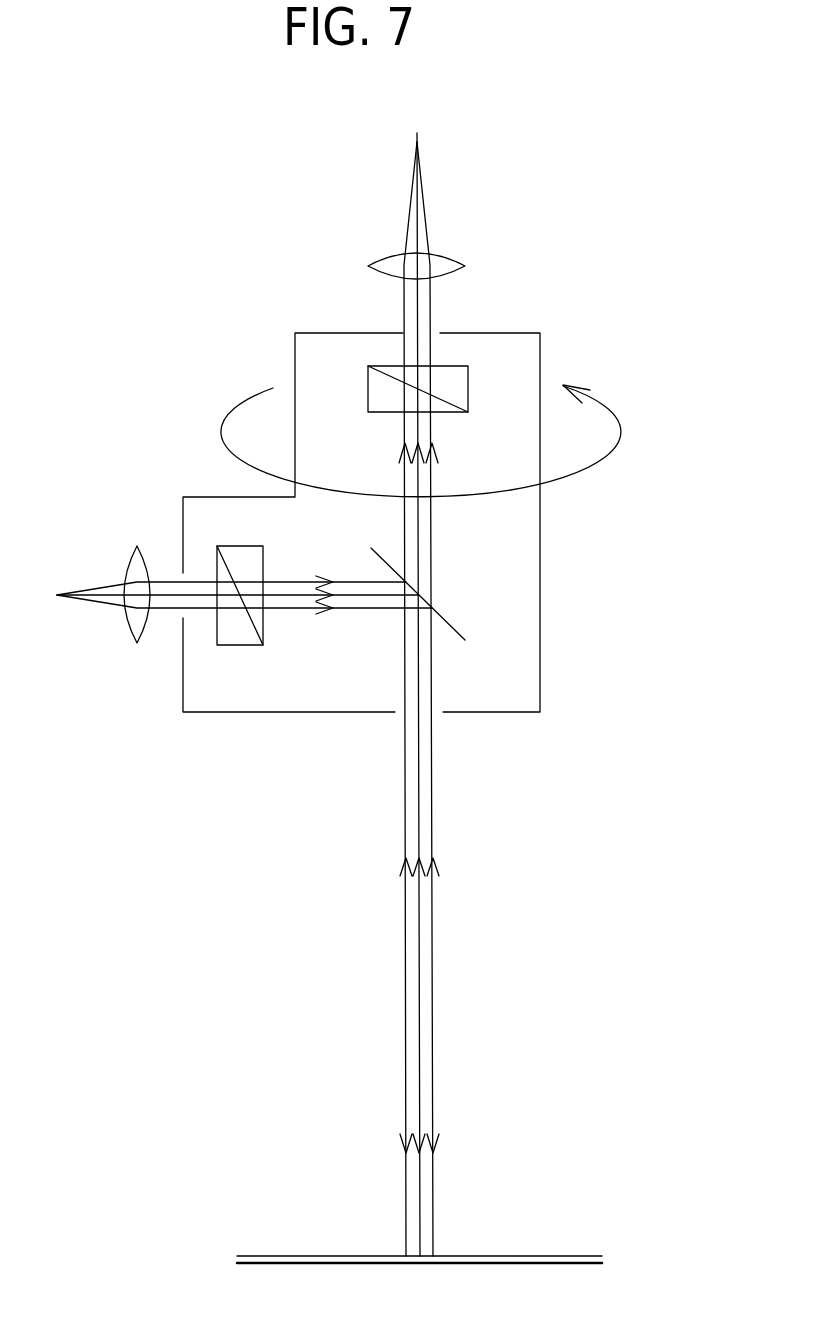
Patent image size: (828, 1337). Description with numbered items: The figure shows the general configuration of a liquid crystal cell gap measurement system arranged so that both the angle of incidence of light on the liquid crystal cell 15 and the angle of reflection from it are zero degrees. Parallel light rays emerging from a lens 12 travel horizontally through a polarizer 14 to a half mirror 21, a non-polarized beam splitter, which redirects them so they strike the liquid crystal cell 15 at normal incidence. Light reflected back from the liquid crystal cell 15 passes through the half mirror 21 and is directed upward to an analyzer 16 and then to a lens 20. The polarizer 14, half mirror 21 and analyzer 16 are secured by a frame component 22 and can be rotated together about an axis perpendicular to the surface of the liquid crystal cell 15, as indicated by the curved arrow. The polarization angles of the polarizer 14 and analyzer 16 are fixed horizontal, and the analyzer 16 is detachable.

The lens 12 is at (131, 627).
The polarizer 14 is at (240, 645).
The liquid crystal cell 15 is at (535, 1256).
The analyzer 16 is at (468, 381).
The lens 20 is at (445, 257).
The half mirror 21 is at (450, 626).
The frame component 22 is at (541, 680).